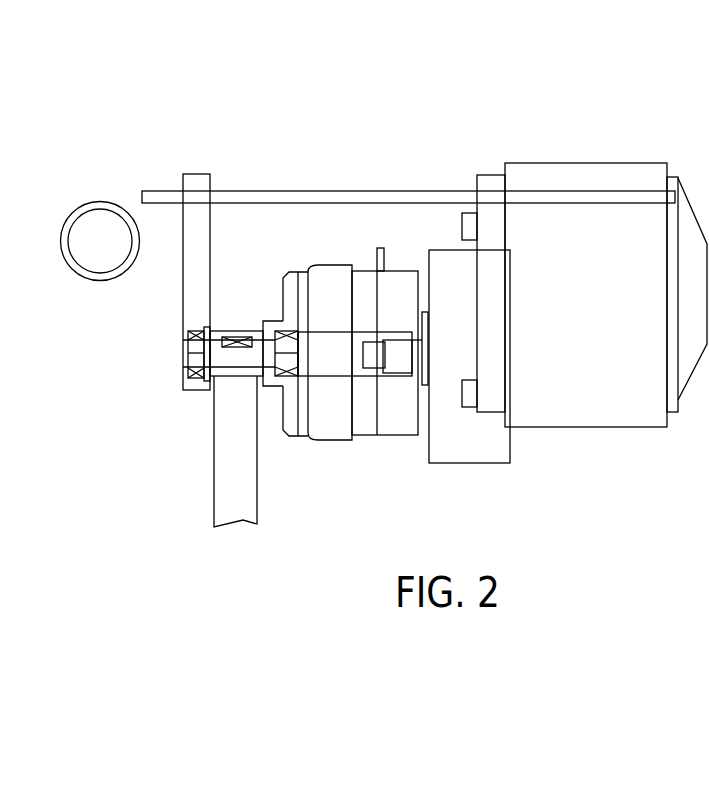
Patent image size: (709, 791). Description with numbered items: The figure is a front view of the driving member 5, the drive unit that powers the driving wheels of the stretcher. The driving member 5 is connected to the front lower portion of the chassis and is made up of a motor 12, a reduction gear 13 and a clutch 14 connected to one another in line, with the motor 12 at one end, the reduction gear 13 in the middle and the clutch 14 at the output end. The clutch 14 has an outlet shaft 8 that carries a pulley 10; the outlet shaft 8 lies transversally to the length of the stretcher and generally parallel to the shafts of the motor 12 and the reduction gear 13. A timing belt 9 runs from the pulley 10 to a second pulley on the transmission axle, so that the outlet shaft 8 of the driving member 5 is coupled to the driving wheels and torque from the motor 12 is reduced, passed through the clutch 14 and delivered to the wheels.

The driving member 5 is at (408, 119).
The outlet shaft 8 is at (222, 332).
The timing belt 9 is at (256, 447).
The pulley 10 is at (237, 336).
The motor 12 is at (584, 177).
The reduction gear 13 is at (443, 252).
The clutch 14 is at (345, 297).